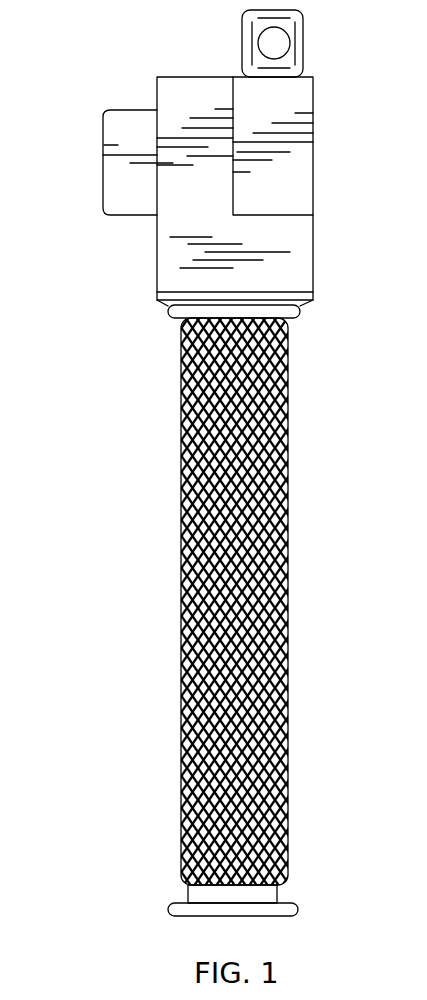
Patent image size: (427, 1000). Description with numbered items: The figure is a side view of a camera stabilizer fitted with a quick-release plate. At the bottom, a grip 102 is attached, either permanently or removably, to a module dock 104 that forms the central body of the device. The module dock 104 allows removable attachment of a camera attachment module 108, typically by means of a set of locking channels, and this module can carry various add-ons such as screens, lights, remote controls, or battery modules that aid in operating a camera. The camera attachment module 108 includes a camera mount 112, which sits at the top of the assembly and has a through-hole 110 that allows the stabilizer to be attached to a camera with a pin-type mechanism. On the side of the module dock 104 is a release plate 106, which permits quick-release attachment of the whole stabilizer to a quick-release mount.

The grip 102 is at (181, 571).
The module dock 104 is at (313, 250).
The release plate 106 is at (103, 167).
The camera attachment module 108 is at (313, 148).
The through-hole 110 is at (264, 41).
The camera mount 112 is at (303, 43).